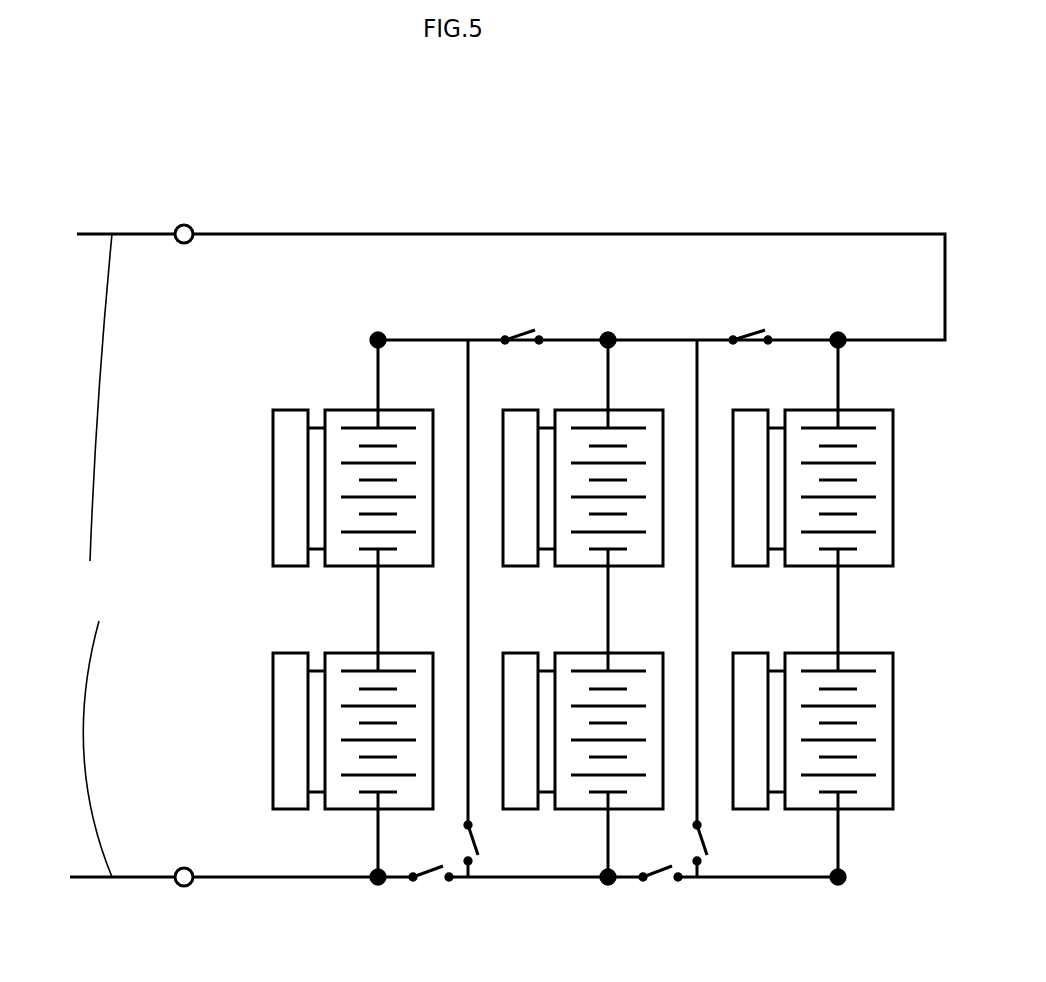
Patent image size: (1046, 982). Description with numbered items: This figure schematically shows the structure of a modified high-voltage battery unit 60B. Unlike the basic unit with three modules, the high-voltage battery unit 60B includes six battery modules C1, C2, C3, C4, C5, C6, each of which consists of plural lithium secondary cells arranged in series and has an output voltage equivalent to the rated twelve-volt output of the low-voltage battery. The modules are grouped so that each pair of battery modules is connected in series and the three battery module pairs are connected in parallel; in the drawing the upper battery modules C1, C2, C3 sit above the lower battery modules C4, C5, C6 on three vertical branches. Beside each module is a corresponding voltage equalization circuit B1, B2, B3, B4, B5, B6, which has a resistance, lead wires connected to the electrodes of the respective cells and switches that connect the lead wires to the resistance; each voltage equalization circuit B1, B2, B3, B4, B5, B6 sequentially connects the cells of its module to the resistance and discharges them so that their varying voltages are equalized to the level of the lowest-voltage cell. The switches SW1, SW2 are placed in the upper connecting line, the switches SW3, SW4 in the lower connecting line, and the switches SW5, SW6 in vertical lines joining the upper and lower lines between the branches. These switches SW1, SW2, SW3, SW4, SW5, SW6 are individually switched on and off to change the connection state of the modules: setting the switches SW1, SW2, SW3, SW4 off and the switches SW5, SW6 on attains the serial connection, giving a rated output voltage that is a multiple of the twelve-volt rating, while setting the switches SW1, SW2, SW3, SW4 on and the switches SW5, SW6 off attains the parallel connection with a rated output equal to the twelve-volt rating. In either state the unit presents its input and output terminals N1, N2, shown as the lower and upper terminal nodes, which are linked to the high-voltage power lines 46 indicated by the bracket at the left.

The high-voltage battery unit 60B is at (595, 162).
The high-voltage power lines 46 is at (91, 555).
The input and output terminal N1 is at (184, 886).
The input and output terminal N2 is at (184, 225).
The voltage equalization circuit B1 is at (293, 410).
The voltage equalization circuit B2 is at (523, 410).
The voltage equalization circuit B3 is at (753, 410).
The voltage equalization circuit B4 is at (293, 653).
The voltage equalization circuit B5 is at (523, 653).
The voltage equalization circuit B6 is at (753, 653).
The battery module C1 is at (397, 410).
The battery module C2 is at (627, 410).
The battery module C3 is at (857, 410).
The battery module C4 is at (397, 653).
The battery module C5 is at (627, 653).
The battery module C6 is at (857, 653).
The switch SW1 is at (522, 332).
The switch SW2 is at (750, 333).
The switch SW3 is at (438, 865).
The switch SW4 is at (648, 865).
The switch SW5 is at (480, 843).
The switch SW6 is at (708, 843).